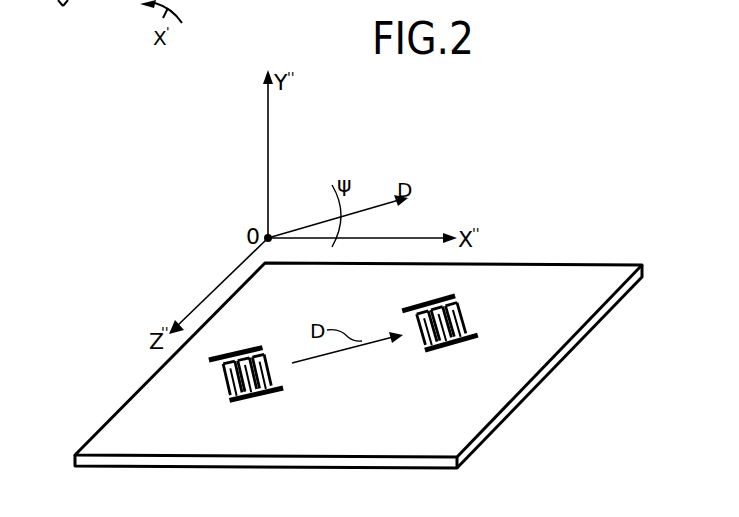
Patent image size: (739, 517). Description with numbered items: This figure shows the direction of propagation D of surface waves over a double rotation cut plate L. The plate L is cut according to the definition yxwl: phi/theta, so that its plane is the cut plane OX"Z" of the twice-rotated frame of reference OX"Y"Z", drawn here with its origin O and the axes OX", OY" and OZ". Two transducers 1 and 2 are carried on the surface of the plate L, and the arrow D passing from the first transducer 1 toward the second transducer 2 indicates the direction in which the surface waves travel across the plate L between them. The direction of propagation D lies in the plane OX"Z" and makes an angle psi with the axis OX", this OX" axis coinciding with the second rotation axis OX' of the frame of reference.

The transducer 1 is at (249, 335).
The transducer 2 is at (437, 360).
The double rotation cut plate L is at (537, 281).